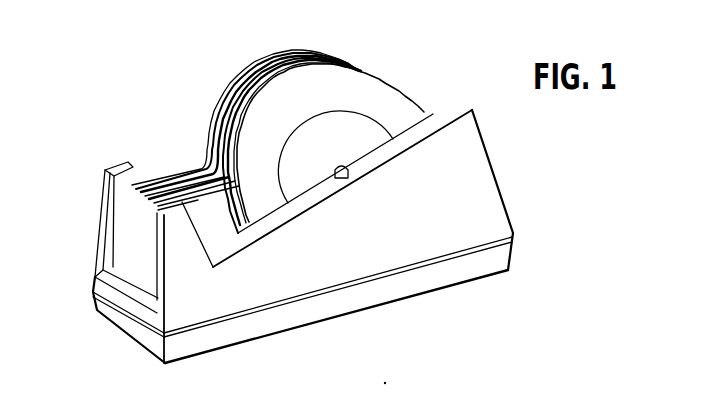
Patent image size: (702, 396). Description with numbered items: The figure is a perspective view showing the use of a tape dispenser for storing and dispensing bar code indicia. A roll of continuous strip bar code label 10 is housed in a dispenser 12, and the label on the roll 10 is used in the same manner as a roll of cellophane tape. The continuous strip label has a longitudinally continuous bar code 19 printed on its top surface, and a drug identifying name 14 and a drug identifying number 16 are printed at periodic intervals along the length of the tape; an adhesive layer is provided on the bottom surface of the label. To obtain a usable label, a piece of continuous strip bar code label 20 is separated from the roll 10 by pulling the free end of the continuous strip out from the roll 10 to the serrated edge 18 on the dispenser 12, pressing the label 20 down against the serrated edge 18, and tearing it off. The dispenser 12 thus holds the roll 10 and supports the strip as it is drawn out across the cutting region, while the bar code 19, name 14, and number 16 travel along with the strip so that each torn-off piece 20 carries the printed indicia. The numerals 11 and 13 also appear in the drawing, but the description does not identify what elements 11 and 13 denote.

The roll of continuous strip bar code label 10 is at (369, 99).
The tape dispenser 11 is at (204, 203).
The dispenser 12 is at (448, 287).
The tape 13 is at (153, 157).
The drug identifying name 14 is at (215, 77).
The drug identifying number 16 is at (247, 63).
The serrated edge 18 is at (136, 196).
The longitudinally continuous bar code 19 is at (131, 186).
The piece of continuous strip bar code label 20 is at (198, 200).